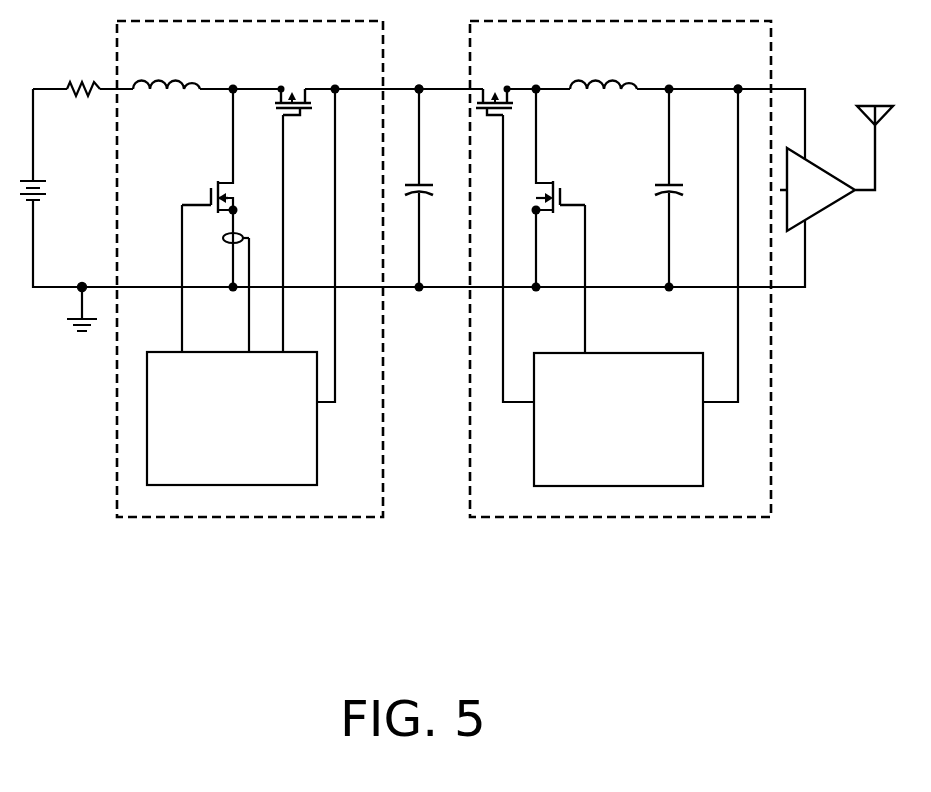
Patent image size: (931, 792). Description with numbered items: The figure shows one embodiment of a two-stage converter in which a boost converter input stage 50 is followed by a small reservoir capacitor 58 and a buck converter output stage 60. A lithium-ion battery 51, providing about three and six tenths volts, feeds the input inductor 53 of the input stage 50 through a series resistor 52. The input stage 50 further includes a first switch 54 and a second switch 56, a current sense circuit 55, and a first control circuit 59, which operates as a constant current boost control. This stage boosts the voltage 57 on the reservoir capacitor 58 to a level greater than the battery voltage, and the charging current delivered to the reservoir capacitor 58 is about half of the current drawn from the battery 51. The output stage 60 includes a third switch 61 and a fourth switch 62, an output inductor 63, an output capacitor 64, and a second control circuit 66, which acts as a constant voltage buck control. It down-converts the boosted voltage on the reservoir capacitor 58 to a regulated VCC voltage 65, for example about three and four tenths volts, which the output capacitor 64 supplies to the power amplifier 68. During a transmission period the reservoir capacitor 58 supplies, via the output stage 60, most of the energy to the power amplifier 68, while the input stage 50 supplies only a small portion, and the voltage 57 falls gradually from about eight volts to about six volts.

The input stage 50 is at (373, 502).
The lithium-ion battery 51 is at (48, 188).
The resistor 52 is at (78, 80).
The input inductor 53 is at (182, 78).
The first switch 54 is at (207, 185).
The current sense circuit 55 is at (243, 235).
The second switch 56 is at (297, 78).
The voltage 57 is at (423, 84).
The reservoir capacitor 58 is at (433, 190).
The first control circuit 59 is at (317, 452).
The output stage 60 is at (759, 502).
The third switch 61 is at (494, 84).
The fourth switch 62 is at (563, 186).
The output inductor 63 is at (609, 78).
The output capacitor 64 is at (687, 193).
The VCC voltage 65 is at (711, 86).
The second control circuit 66 is at (703, 455).
The power amplifier 68 is at (812, 158).